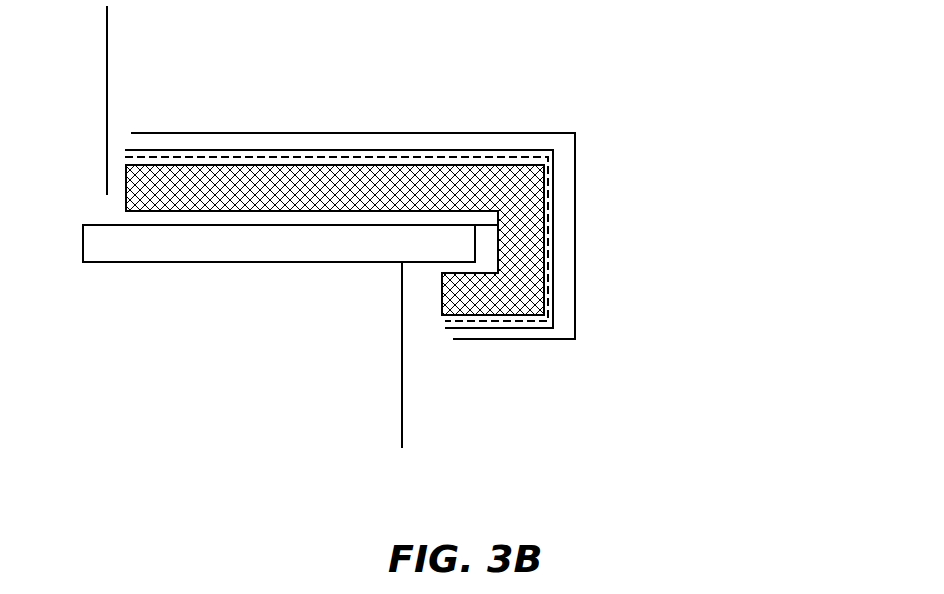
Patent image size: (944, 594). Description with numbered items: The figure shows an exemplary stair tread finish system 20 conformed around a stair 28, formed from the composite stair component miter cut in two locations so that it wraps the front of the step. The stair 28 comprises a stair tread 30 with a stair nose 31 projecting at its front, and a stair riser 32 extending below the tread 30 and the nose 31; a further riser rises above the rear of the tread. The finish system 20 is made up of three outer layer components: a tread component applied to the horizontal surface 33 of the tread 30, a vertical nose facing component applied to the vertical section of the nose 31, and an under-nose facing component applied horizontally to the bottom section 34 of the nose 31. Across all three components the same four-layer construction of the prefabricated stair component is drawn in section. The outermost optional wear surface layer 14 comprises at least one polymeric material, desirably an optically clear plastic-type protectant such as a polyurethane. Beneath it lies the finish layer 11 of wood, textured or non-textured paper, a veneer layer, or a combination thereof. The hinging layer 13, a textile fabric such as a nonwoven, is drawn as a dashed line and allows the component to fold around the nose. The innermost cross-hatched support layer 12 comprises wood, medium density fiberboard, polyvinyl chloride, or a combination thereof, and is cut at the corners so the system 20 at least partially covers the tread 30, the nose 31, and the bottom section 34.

The finish layer 11 is at (320, 150).
The support layer 12 is at (553, 220).
The hinging layer 13 is at (364, 158).
The wear surface layer 14 is at (280, 132).
The stair tread finish system 20 is at (710, 152).
The stair 28 is at (256, 374).
The stair tread 30 is at (148, 241).
The stair nose 31 is at (424, 243).
The stair riser 32 is at (104, 85).
The horizontal surface 33 is at (108, 224).
The bottom section 34 is at (445, 263).